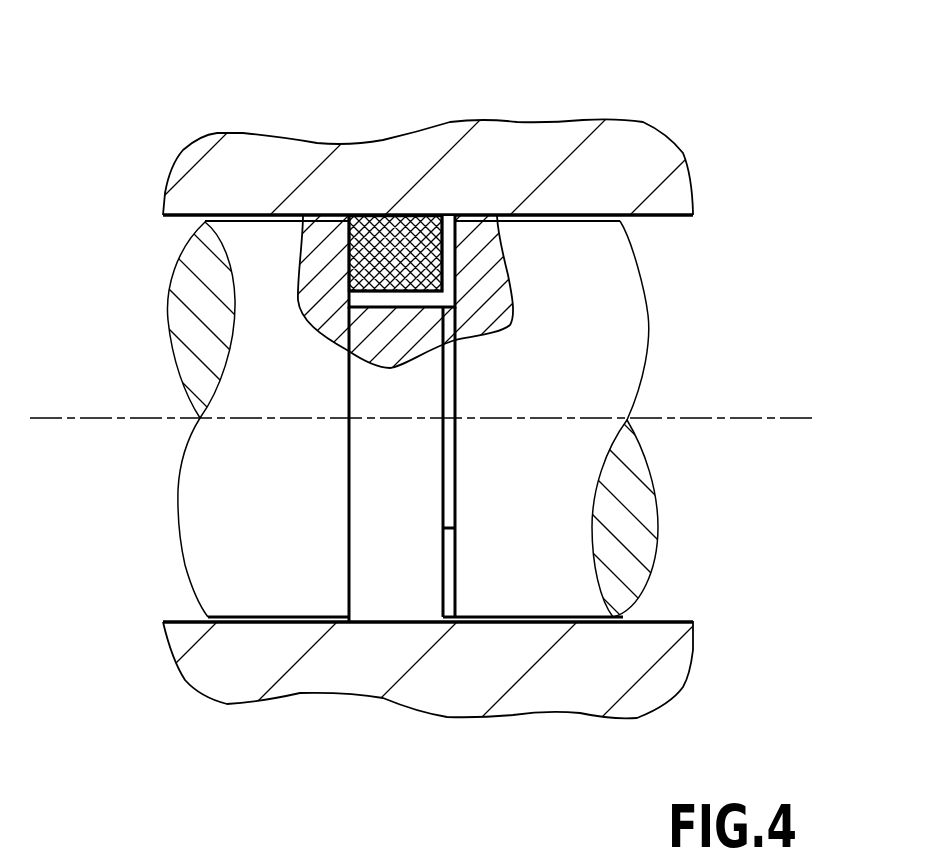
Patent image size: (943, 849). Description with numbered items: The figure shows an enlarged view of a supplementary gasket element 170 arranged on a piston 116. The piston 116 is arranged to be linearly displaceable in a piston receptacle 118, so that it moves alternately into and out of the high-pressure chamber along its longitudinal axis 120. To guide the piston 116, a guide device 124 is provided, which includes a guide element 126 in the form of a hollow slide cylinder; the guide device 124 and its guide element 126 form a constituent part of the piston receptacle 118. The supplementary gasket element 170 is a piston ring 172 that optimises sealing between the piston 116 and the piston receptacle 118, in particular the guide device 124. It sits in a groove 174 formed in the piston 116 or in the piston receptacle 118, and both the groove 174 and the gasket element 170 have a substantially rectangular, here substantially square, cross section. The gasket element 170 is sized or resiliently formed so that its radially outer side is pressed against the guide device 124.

The piston 116 is at (622, 358).
The piston receptacle 118 is at (542, 157).
The longitudinal axis 120 is at (90, 418).
The guide device 124 is at (650, 151).
The guide element 126 is at (667, 193).
The supplementary gasket element 170 is at (372, 235).
The piston ring 172 is at (408, 233).
The groove 174 is at (458, 283).